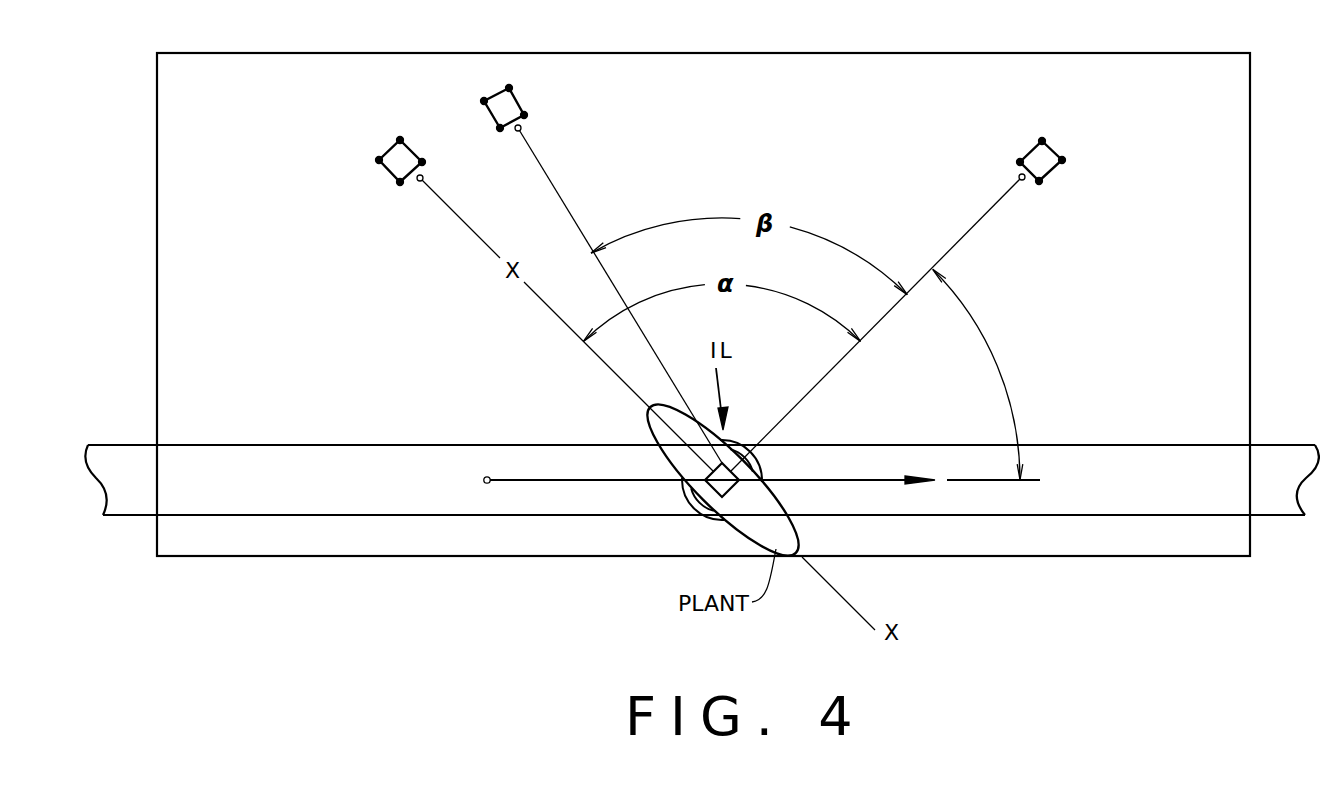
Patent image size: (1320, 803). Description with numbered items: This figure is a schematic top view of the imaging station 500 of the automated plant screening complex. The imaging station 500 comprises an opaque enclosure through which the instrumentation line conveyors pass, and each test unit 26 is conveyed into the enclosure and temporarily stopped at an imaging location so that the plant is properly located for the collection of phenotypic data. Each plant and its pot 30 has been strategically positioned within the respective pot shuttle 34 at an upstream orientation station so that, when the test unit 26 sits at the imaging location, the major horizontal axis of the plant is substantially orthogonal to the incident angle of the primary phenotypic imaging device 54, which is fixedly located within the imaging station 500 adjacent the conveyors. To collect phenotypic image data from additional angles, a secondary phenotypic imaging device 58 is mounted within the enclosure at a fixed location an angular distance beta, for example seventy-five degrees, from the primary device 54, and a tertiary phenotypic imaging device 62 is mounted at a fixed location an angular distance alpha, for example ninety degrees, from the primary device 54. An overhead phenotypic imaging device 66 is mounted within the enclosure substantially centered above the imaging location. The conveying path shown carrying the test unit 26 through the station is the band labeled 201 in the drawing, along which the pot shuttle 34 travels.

The imaging station 500 is at (1217, 138).
The primary phenotypic imaging device 54 is at (1043, 162).
The secondary phenotypic imaging device 58 is at (505, 105).
The tertiary phenotypic imaging device 62 is at (402, 158).
The overhead phenotypic imaging device 66 is at (652, 428).
The test unit 26 is at (645, 494).
The pot 30 is at (713, 497).
The pot shuttle 34 is at (760, 470).
The ground strip / row 201 is at (1130, 490).